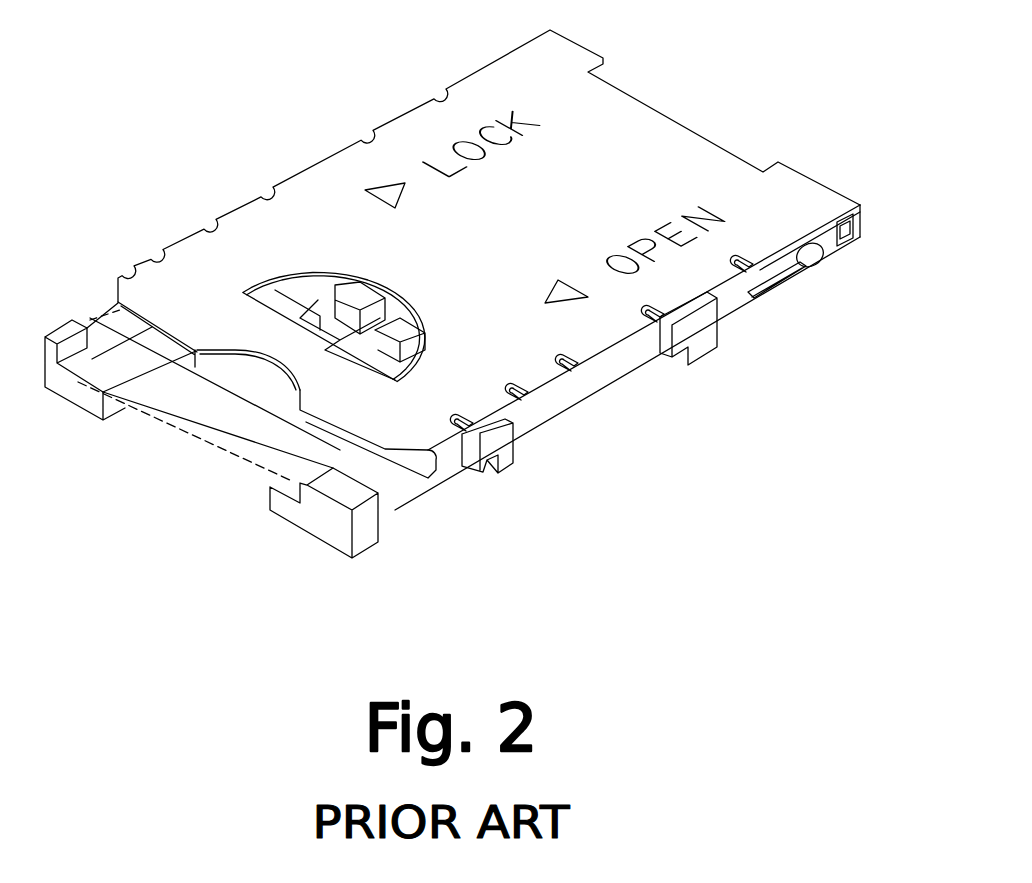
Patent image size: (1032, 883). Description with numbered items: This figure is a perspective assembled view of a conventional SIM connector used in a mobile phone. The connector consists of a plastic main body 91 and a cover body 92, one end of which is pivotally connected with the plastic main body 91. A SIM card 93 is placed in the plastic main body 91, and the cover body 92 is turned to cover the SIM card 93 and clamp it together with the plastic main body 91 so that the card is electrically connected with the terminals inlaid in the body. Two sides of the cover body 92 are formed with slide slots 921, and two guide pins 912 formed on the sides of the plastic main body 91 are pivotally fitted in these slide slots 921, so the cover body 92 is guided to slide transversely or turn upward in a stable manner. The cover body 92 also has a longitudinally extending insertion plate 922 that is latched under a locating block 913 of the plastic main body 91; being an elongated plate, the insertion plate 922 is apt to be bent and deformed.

The plastic main body 91 is at (310, 518).
The cover body 92 is at (407, 157).
The SIM card 93 is at (188, 434).
The guide pin 912 is at (805, 262).
The locating block 913 is at (493, 474).
The slide slot 921 is at (853, 243).
The insertion plate 922 is at (468, 467).